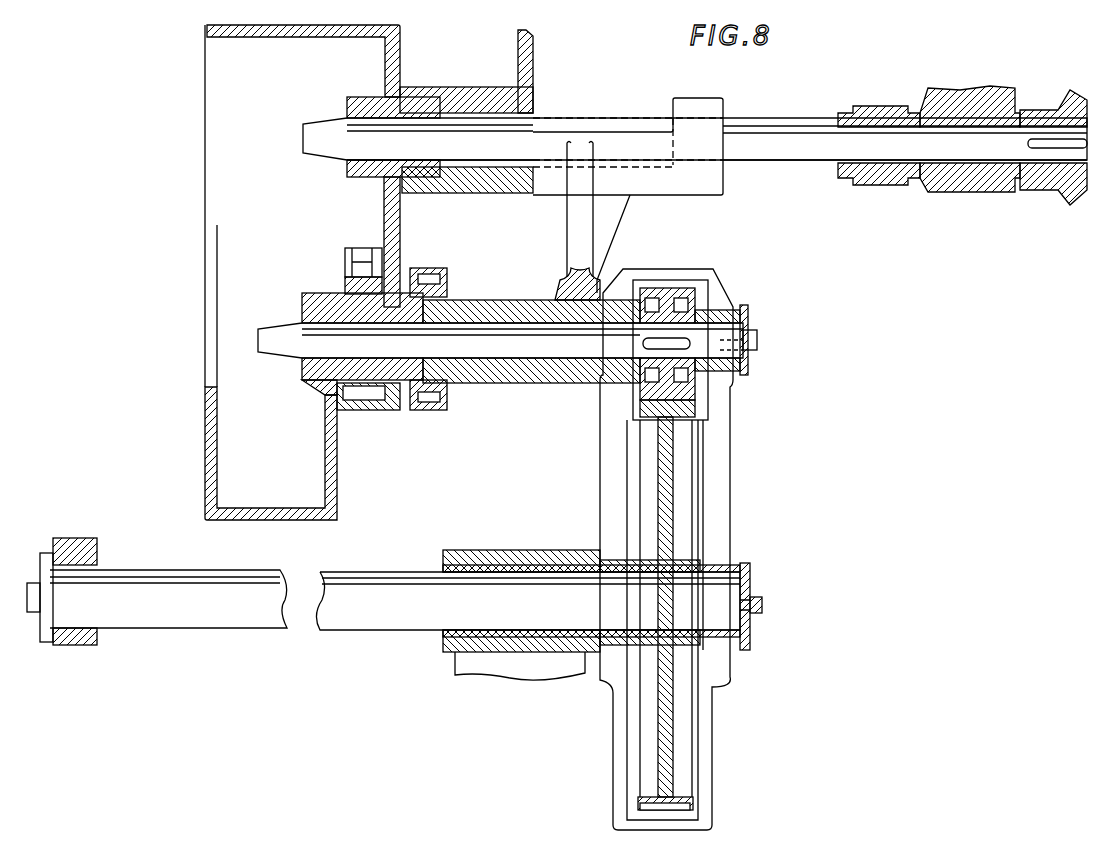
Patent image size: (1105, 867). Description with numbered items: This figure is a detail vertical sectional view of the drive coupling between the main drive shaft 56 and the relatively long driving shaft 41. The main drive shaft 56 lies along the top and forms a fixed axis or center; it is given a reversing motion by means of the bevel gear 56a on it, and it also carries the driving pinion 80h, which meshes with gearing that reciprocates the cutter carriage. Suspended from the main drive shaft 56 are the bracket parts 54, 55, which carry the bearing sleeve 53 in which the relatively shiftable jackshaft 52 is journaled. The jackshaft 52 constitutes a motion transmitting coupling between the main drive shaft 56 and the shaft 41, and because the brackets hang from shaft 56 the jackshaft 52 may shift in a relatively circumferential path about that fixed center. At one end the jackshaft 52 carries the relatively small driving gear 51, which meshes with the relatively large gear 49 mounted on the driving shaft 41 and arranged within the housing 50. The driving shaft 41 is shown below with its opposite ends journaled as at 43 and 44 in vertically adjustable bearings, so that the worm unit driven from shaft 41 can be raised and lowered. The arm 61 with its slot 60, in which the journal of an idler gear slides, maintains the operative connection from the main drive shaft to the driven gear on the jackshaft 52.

The driving shaft 41 is at (406, 600).
The journal 43 is at (85, 526).
The journal 44 is at (520, 546).
The large gear 49 is at (683, 510).
The housing 50 is at (633, 718).
The driving gear 51 is at (700, 403).
The jackshaft 52 is at (507, 345).
The bearing sleeve 53 is at (525, 341).
The bracket part 54 is at (567, 248).
The bracket part 55 is at (400, 230).
The main drive shaft 56 is at (770, 135).
The bevel gear 56a is at (1057, 106).
The slot 60 is at (362, 258).
The arm 61 is at (343, 290).
The driving pinion 80h is at (886, 106).